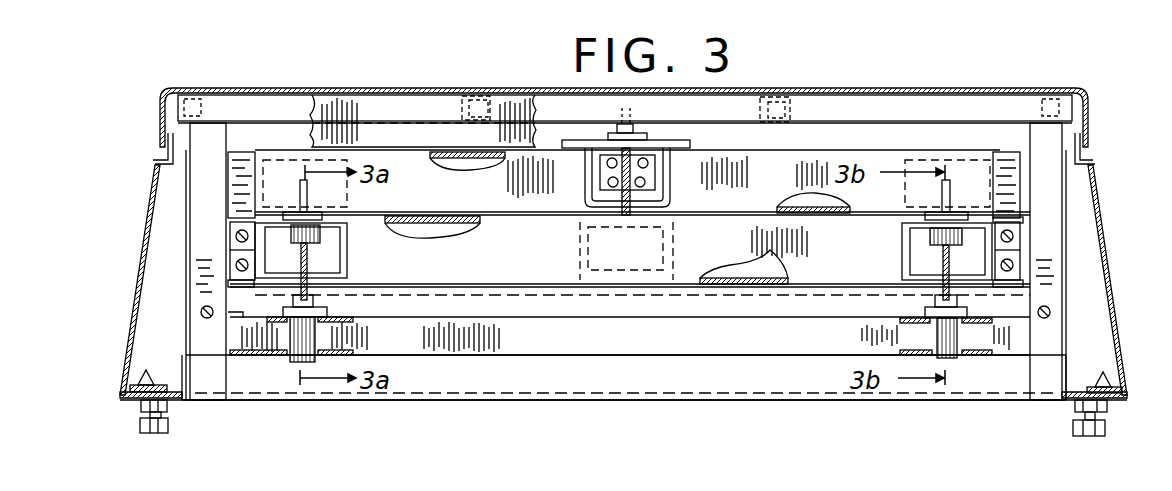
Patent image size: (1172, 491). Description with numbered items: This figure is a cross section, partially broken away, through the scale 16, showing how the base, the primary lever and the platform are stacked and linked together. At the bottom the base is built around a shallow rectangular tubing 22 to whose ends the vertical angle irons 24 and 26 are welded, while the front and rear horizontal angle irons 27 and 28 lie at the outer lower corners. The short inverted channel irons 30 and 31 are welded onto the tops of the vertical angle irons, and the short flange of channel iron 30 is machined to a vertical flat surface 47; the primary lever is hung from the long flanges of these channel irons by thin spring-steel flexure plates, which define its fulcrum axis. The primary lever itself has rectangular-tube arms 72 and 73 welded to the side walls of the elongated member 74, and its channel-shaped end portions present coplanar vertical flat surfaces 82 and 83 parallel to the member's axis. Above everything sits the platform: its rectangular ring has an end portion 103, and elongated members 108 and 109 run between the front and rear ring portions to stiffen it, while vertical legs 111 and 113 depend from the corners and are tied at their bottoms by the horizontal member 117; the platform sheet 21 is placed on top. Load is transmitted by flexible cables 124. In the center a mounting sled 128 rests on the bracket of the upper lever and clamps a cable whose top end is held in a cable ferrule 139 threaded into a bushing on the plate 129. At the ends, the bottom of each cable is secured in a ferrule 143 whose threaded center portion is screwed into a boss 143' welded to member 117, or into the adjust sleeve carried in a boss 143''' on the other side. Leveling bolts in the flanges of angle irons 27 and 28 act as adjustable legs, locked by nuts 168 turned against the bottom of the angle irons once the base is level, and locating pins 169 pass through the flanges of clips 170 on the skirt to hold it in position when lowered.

The scale 16 is at (163, 84).
The platform sheet 21 is at (985, 88).
The shallow rectangular tubing 22 is at (476, 405).
The vertical angle iron 24 is at (190, 293).
The vertical angle iron 26 is at (1063, 298).
The front horizontal angle iron 27 is at (151, 282).
The rear horizontal angle iron 28 is at (1094, 282).
The short inverted channel iron 30 is at (236, 152).
The short inverted channel iron 31 is at (1005, 152).
The vertical flat surface 47 is at (1012, 222).
The lever arm 72 is at (348, 252).
The lever arm 73 is at (902, 243).
The elongated member 74 is at (460, 288).
The vertical flat surface 82 is at (236, 288).
The vertical flat surface 83 is at (1010, 283).
The end portion 103 is at (930, 105).
The elongated member 108 is at (790, 105).
The elongated member 109 is at (462, 100).
The vertical leg 111 is at (168, 145).
The vertical leg 113 is at (1080, 150).
The horizontal member 117 is at (458, 358).
The flexible cable 124 is at (307, 262).
The mounting sled 128 is at (701, 153).
The plate 129 is at (592, 140).
The cable ferrule 139 is at (633, 128).
The ferrule 143 is at (916, 326).
The boss 143' is at (969, 309).
The boss 143''' is at (300, 369).
The nut 168 is at (1108, 412).
The locating pin 169 is at (1100, 372).
The clip 170 is at (145, 368).